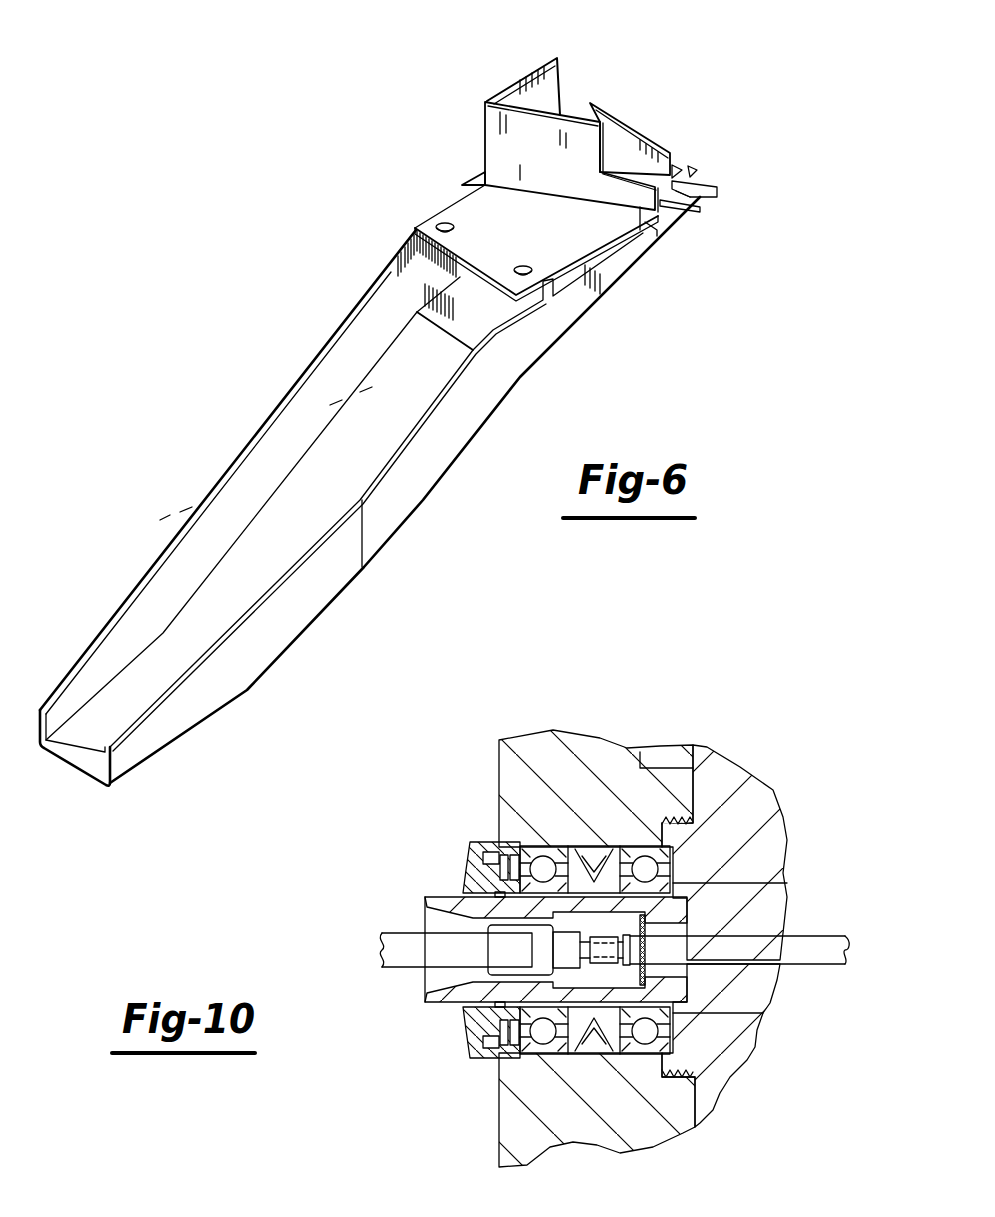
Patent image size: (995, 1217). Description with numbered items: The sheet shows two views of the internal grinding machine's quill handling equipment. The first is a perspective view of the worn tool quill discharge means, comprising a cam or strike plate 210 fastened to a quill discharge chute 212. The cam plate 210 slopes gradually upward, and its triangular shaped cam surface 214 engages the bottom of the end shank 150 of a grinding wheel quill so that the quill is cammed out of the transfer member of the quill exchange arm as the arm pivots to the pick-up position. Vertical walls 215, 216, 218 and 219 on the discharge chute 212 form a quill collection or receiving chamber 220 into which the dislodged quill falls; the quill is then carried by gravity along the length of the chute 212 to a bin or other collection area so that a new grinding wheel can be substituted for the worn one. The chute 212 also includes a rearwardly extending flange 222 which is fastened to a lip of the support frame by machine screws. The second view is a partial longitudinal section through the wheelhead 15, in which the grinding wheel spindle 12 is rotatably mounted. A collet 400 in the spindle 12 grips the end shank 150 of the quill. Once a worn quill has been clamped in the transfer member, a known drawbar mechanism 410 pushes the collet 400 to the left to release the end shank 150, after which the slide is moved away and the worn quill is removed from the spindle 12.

In FIG. 6, the cam or strike plate 210 is at (692, 197).
In FIG. 6, the quill discharge chute 212 is at (333, 296).
In FIG. 6, the triangular shaped cam surface 214 is at (686, 192).
In FIG. 6, the vertical wall 215 is at (640, 230).
In FIG. 6, the vertical wall 216 is at (495, 136).
In FIG. 6, the vertical wall 218 is at (527, 90).
In FIG. 6, the vertical wall 219 is at (630, 143).
In FIG. 6, the quill collection or receiving chamber 220 is at (609, 130).
In FIG. 6, the rearwardly extending flange 222 is at (552, 258).
In FIG. 10, the wheelhead 15 is at (607, 760).
In FIG. 10, the grinding wheel spindle 12 is at (440, 902).
In FIG. 10, the collet 400 is at (435, 921).
In FIG. 10, the end shank 150 is at (410, 962).
In FIG. 10, the drawbar mechanism 410 is at (856, 912).